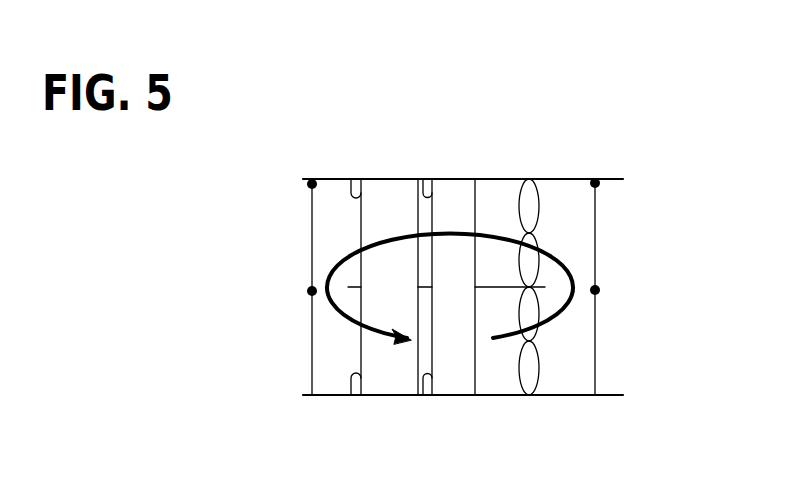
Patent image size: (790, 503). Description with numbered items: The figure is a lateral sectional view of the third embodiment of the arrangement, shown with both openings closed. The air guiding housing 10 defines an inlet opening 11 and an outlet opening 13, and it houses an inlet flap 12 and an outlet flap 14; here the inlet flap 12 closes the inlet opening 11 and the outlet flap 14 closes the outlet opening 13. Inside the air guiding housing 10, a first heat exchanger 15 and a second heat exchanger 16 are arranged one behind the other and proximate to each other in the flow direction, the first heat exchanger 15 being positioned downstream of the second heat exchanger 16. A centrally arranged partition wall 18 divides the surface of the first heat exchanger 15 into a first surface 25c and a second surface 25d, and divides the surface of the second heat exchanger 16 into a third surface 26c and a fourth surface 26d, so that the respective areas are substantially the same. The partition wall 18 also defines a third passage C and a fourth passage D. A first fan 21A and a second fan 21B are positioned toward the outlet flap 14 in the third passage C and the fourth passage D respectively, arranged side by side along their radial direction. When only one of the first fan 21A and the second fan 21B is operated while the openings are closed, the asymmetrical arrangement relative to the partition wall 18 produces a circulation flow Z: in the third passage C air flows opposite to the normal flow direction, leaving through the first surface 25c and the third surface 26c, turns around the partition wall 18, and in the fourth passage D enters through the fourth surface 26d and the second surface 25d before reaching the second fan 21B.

The air guiding housing 10 is at (622, 163).
The inlet opening 11 is at (330, 378).
The inlet flap 12 is at (312, 322).
The outlet opening 13 is at (565, 376).
The outlet flap 14 is at (595, 324).
The first heat exchanger 15 is at (452, 368).
The second heat exchanger 16 is at (388, 368).
The partition wall 18 is at (484, 292).
The first fan 21A is at (536, 190).
The second fan 21B is at (533, 377).
The first surface 25c is at (423, 179).
The second surface 25d is at (424, 395).
The third surface 26c is at (351, 179).
The fourth surface 26d is at (351, 395).
The circulation flow Z is at (552, 266).
The third passage C is at (340, 206).
The fourth passage D is at (338, 359).